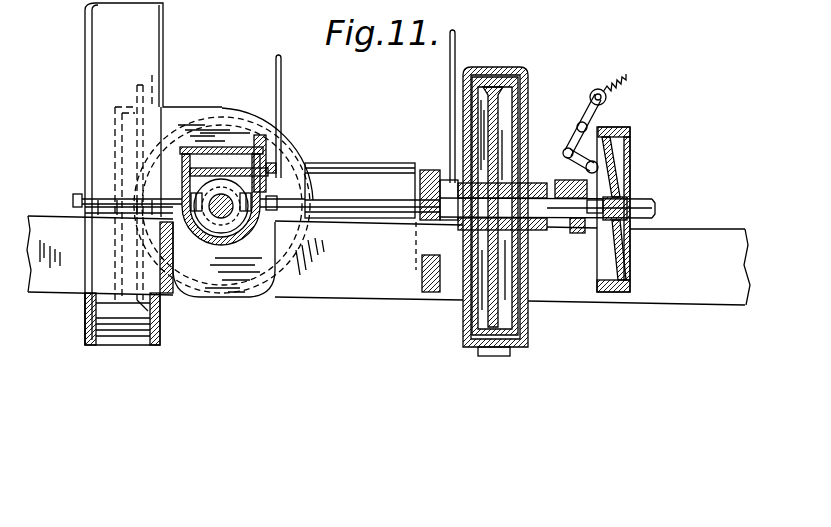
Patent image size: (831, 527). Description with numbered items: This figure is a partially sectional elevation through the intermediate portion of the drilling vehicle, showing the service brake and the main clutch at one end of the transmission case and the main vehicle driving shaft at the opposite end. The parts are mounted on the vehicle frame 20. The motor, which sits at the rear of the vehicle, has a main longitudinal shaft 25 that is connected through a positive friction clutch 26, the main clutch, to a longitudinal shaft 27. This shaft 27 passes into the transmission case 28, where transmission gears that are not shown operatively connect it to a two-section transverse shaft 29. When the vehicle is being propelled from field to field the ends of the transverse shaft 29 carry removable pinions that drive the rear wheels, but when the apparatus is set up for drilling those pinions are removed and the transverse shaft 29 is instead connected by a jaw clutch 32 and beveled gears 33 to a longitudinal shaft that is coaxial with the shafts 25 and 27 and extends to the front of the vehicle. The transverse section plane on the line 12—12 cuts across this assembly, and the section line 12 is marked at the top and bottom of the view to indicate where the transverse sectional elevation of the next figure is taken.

The section line 12 is at (230, 36).
The vehicle frame 20 is at (388, 260).
The main longitudinal shaft 25 is at (640, 200).
The positive friction clutch 26 is at (630, 134).
The longitudinal shaft 27 is at (556, 224).
The transmission case 28 is at (353, 171).
The two-section transverse shaft 29 is at (220, 214).
The jaw clutch 32 is at (285, 93).
The beveled gears 33 is at (152, 78).